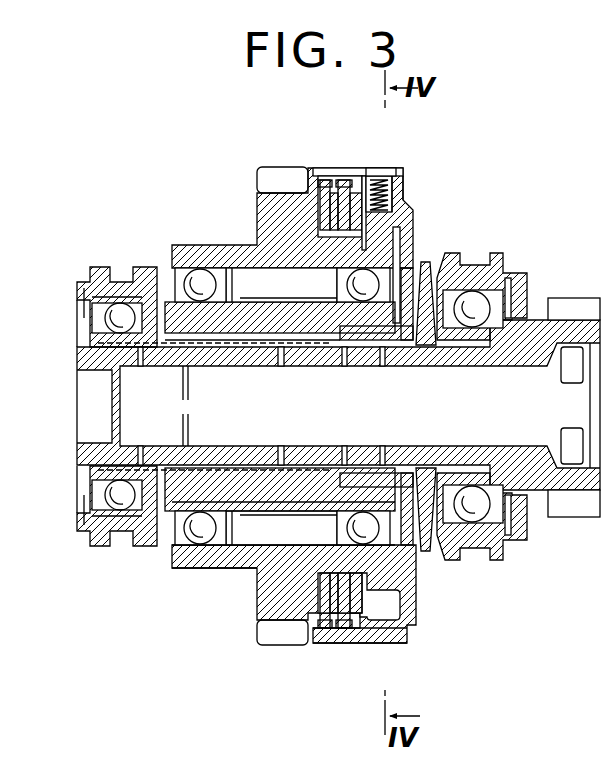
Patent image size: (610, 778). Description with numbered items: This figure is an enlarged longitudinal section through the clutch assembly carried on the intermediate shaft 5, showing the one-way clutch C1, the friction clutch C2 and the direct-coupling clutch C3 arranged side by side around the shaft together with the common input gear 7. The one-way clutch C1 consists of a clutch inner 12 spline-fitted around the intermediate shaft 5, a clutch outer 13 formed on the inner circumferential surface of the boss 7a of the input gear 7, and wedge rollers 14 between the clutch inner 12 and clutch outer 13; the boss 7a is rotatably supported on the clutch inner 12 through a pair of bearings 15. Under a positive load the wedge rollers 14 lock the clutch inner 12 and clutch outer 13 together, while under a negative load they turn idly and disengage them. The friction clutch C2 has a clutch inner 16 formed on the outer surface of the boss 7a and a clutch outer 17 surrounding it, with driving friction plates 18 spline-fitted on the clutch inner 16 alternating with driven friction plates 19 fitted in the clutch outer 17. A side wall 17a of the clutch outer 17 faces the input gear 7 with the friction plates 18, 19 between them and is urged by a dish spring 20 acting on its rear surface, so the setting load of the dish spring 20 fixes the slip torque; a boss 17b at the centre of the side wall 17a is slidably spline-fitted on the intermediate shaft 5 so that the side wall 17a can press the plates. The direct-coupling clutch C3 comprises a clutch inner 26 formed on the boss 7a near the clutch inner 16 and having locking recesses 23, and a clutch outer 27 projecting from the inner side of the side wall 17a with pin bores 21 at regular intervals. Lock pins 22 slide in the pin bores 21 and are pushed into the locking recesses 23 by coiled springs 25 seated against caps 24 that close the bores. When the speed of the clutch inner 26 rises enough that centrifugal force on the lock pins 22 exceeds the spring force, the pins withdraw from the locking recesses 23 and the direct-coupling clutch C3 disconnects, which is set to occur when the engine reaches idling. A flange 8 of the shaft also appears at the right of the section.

The intermediate shaft 5 is at (534, 472).
The input gear 7 is at (258, 635).
The boss 7a is at (196, 563).
The flange 8 is at (576, 298).
The clutch inner 12 is at (225, 468).
The clutch outer 13 is at (246, 556).
The wedge rollers 14 is at (296, 530).
The bearings 15 is at (200, 520).
The clutch inner 16 is at (322, 592).
The clutch outer 17 is at (330, 643).
The side wall 17a is at (421, 548).
The boss 17b is at (393, 476).
The driving friction plates 18 is at (303, 226).
The driven friction plates 19 is at (336, 180).
The dish spring 20 is at (448, 312).
The pin bores 21 is at (406, 201).
The lock pins 22 is at (368, 262).
The locking recesses 23 is at (406, 238).
The cap 24 is at (386, 176).
The coiled springs 25 is at (397, 174).
The clutch inner 26 is at (392, 572).
The clutch outer 27 is at (407, 635).
The one-way clutch C1 is at (238, 262).
The friction clutch C2 is at (352, 644).
The direct-coupling clutch C3 is at (376, 166).